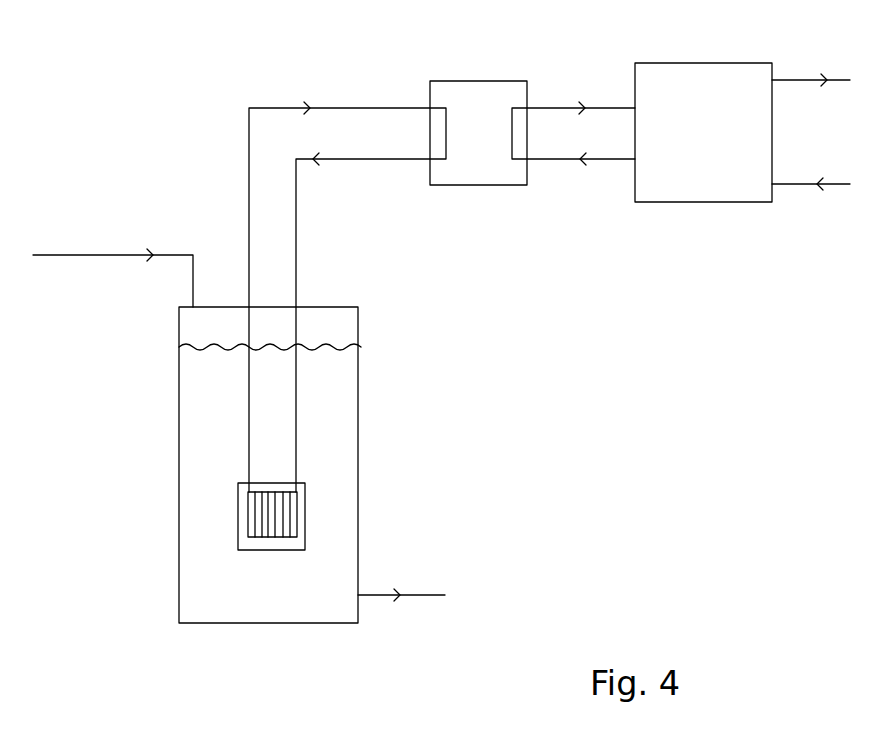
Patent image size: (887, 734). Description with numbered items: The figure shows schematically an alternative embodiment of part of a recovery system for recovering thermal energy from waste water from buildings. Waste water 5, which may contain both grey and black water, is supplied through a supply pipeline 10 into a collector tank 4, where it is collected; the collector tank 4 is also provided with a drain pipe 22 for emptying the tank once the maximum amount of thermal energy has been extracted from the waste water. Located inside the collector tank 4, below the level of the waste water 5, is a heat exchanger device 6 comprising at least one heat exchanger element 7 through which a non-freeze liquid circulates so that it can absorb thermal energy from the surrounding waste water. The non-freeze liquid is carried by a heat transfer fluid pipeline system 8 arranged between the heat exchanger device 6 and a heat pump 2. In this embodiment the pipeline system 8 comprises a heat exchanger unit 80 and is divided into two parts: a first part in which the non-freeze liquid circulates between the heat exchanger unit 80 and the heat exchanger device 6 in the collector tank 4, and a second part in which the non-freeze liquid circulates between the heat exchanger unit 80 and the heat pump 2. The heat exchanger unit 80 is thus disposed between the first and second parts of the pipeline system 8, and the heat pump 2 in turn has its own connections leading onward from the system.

The heat pump 2 is at (654, 54).
The collector tank 4 is at (228, 628).
The waste water 5 is at (341, 388).
The heat exchanger device 6 is at (292, 556).
The heat exchanger element 7 is at (248, 505).
The heat transfer fluid pipeline system 8 is at (292, 105).
The supply pipeline 10 is at (87, 260).
The drain pipe 22 is at (383, 597).
The heat exchanger unit 80 is at (458, 80).